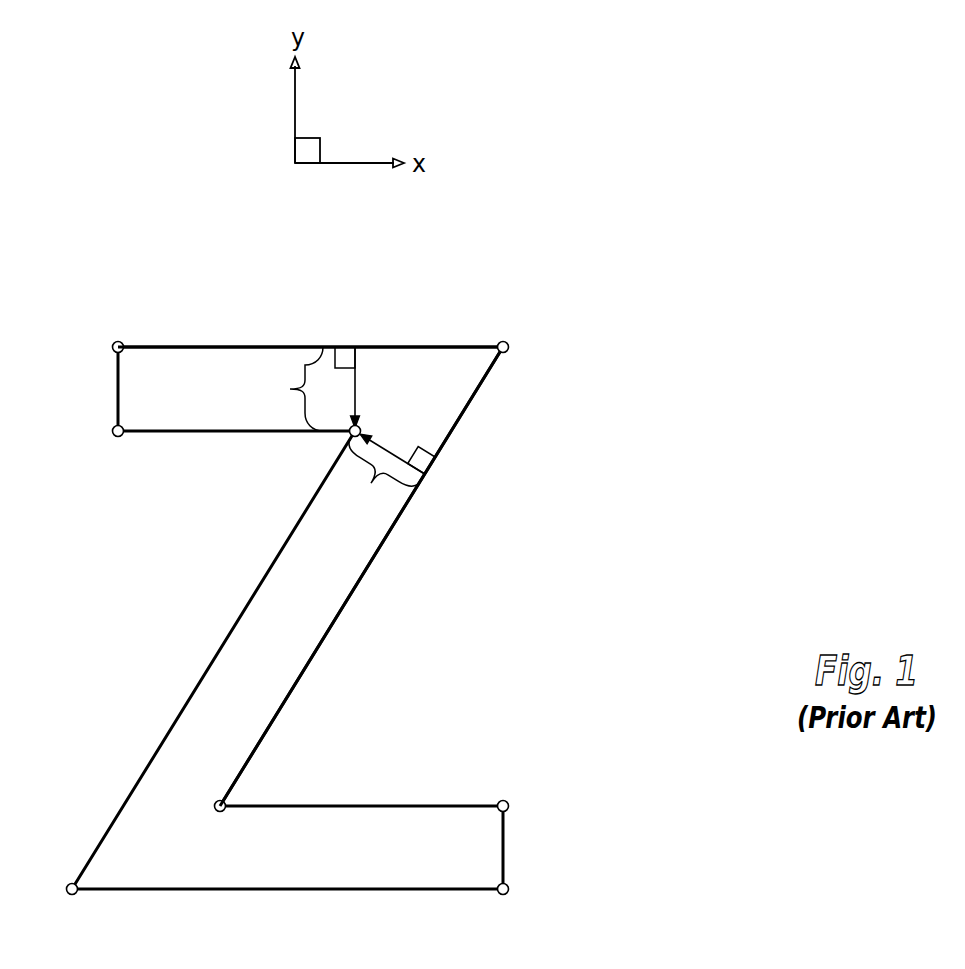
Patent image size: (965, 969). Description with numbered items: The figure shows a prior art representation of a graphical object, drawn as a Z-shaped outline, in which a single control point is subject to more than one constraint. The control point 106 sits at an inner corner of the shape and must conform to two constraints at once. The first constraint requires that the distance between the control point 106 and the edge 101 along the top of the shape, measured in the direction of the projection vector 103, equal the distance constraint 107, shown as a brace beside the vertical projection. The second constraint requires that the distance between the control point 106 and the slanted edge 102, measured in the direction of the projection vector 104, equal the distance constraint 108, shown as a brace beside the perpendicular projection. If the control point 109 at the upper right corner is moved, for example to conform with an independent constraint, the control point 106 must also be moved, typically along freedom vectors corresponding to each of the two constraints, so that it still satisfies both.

The edge 101 is at (303, 347).
The edge 102 is at (295, 693).
The projection vector 103 is at (357, 390).
The projection vector 104 is at (387, 447).
The control point 106 is at (349, 438).
The distance constraint 107 is at (290, 389).
The distance constraint 108 is at (370, 483).
The control point 109 is at (508, 350).